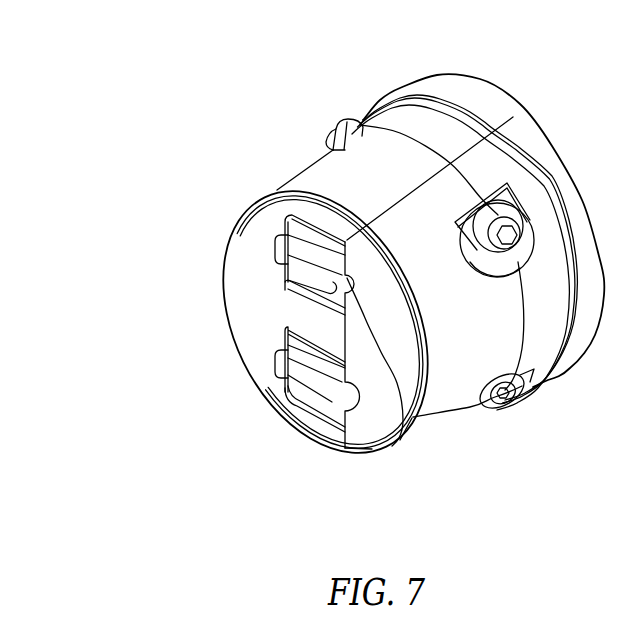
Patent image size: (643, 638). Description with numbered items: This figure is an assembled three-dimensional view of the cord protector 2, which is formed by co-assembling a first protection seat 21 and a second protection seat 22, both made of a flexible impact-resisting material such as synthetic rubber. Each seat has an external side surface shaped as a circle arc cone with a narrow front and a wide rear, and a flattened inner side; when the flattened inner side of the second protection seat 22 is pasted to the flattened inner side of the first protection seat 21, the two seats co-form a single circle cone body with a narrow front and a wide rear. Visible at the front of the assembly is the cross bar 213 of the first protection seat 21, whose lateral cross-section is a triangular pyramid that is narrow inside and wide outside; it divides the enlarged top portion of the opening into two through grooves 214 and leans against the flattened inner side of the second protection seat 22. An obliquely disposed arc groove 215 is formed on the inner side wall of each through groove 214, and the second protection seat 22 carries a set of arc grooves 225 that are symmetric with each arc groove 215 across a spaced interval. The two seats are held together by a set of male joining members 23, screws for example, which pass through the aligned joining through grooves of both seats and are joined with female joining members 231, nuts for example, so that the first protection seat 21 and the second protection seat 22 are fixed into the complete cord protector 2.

The cord protector 2 is at (173, 325).
The first protection seat 21 is at (258, 290).
The second protection seat 22 is at (443, 430).
The male joining members 23 is at (493, 213).
The cross bar 213 is at (322, 323).
The through grooves 214 is at (322, 265).
The arc groove 215 is at (300, 247).
The arc grooves 225 is at (365, 432).
The female joining members 231 is at (347, 128).